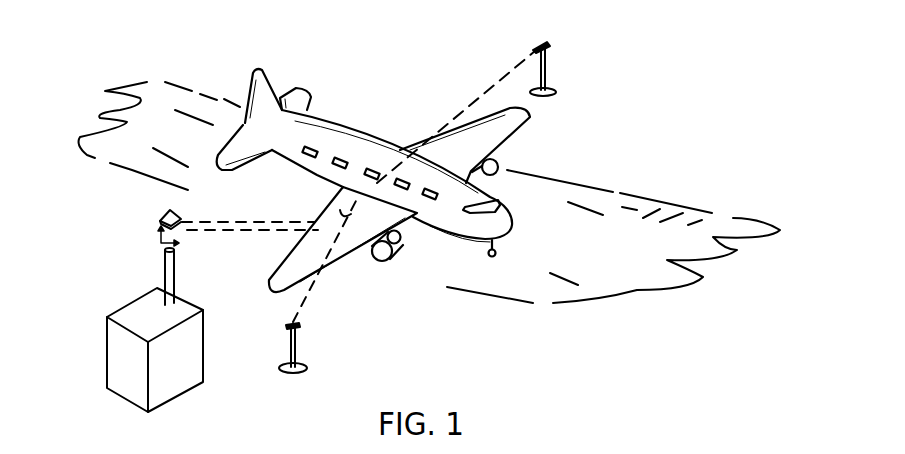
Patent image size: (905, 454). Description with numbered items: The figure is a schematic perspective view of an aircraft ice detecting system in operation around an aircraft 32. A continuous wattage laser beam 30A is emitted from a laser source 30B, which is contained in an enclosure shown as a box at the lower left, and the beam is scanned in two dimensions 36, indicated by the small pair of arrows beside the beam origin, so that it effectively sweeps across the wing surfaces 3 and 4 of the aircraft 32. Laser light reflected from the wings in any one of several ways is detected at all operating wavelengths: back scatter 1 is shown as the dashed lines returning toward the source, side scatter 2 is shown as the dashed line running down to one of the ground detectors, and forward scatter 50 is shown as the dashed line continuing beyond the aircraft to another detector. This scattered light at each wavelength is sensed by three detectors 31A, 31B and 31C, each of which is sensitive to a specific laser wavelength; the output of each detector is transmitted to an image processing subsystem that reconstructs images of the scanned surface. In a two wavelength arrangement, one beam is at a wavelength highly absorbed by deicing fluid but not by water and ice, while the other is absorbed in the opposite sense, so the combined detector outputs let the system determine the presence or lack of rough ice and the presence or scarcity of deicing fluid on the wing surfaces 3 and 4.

The back scatter 1 is at (260, 223).
The side scatter 2 is at (308, 288).
The wing surface 3 is at (373, 226).
The wing surface 4 is at (477, 149).
The laser beam 30A is at (238, 231).
The laser source 30B is at (115, 367).
The detector 31A is at (160, 219).
The detector 31B is at (300, 324).
The detector 31C is at (552, 46).
The aircraft 32 is at (331, 135).
The two-dimensional scanning 36 is at (158, 241).
The forward scatter 50 is at (507, 73).